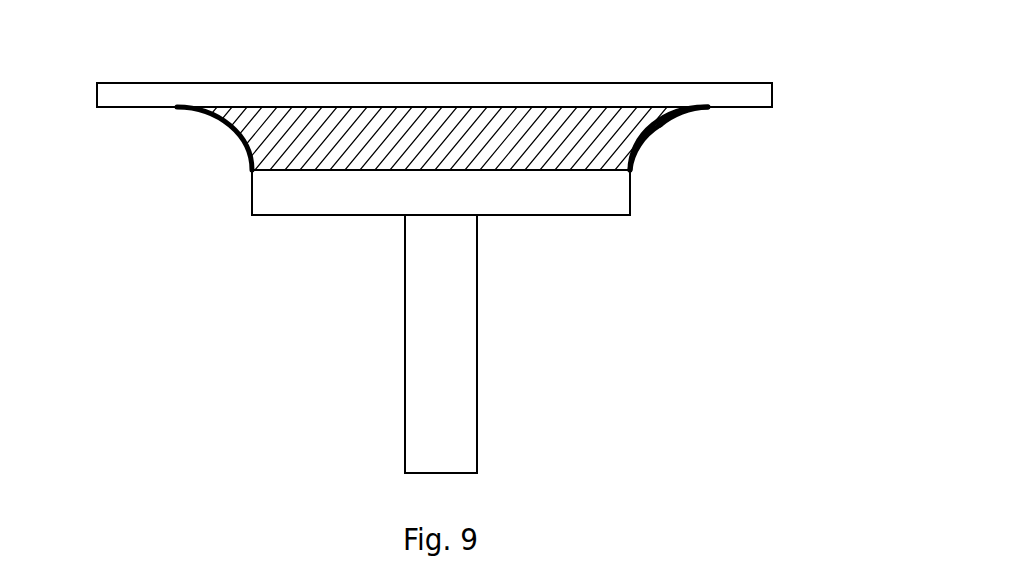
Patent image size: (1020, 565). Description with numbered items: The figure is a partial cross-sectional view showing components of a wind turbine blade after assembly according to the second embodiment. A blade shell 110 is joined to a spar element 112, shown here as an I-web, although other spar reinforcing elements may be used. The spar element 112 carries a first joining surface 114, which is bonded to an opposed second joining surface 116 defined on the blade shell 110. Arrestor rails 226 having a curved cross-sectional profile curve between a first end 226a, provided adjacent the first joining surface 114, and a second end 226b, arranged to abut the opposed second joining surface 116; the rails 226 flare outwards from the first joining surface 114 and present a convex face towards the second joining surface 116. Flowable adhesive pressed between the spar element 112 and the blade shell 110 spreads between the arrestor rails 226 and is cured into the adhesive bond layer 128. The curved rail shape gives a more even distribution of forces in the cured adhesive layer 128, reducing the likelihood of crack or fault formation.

The blade shell 110 is at (120, 98).
The spar element 112 is at (419, 283).
The first joining surface 114 is at (500, 170).
The second joining surface 116 is at (471, 112).
The adhesive layer 128 is at (303, 120).
The arrestor rail 226 is at (233, 145).
The first end 226a is at (645, 186).
The second end 226b is at (713, 115).